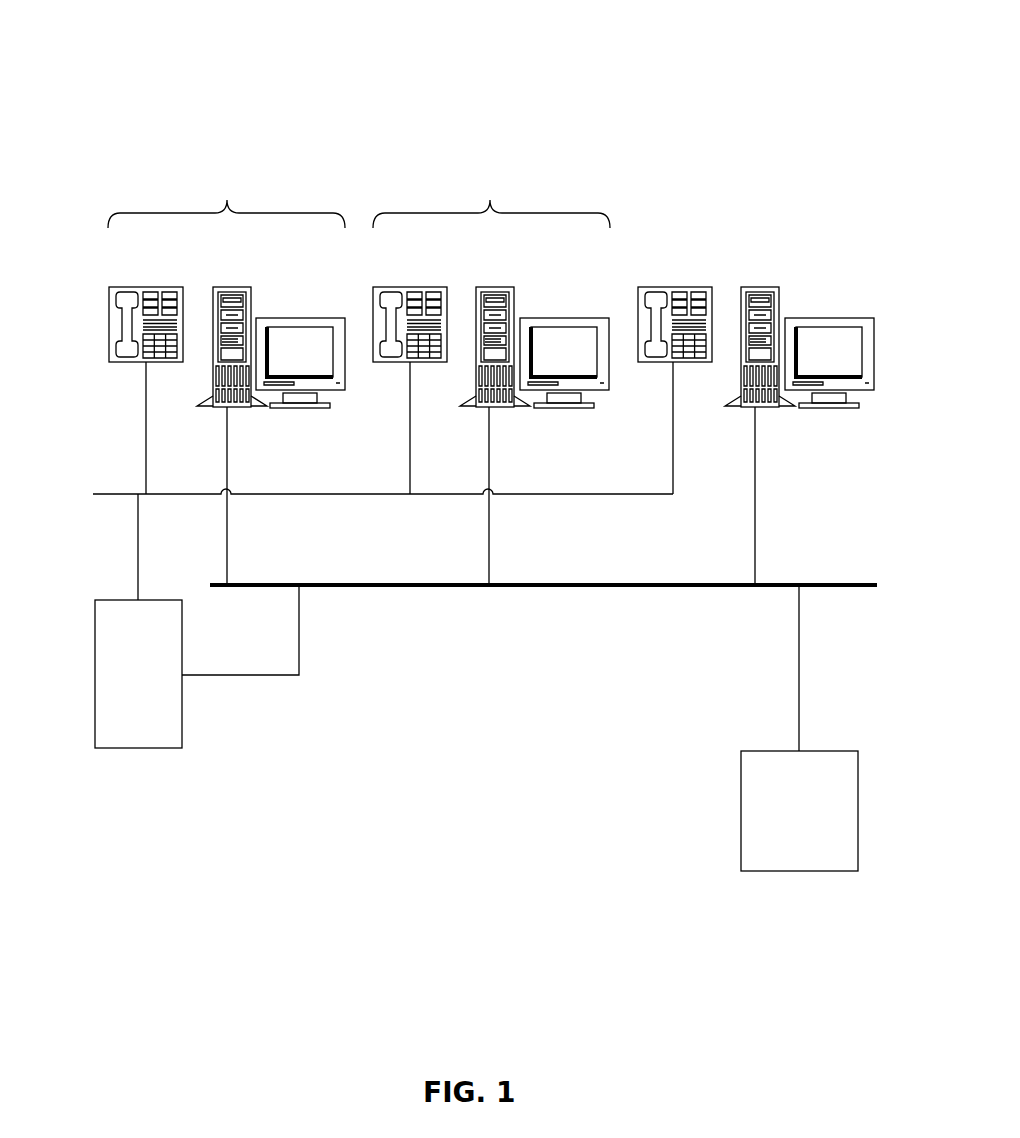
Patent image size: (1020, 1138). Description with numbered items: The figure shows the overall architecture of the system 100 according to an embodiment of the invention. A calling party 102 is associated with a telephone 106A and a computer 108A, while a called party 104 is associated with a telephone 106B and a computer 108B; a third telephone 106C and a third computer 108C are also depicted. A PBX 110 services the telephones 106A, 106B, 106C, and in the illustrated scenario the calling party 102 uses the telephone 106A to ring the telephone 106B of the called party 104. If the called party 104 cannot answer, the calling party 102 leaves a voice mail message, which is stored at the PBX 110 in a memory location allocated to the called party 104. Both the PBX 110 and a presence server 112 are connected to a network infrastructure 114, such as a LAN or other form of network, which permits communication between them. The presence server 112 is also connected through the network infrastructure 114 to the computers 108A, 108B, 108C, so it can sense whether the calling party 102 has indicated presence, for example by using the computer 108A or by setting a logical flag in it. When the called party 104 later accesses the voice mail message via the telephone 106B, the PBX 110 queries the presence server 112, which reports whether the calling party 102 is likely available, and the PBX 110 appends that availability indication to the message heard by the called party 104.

The system 100 is at (823, 80).
The calling party 102 is at (226, 291).
The called party 104 is at (491, 291).
The telephone 106A is at (146, 287).
The computer 108A is at (229, 287).
The telephone 106B is at (406, 287).
The computer 108B is at (494, 287).
The telephone 106C is at (671, 287).
The computer 108C is at (759, 287).
The PBX 110 is at (197, 621).
The presence server 112 is at (799, 728).
The network infrastructure 114 is at (422, 588).